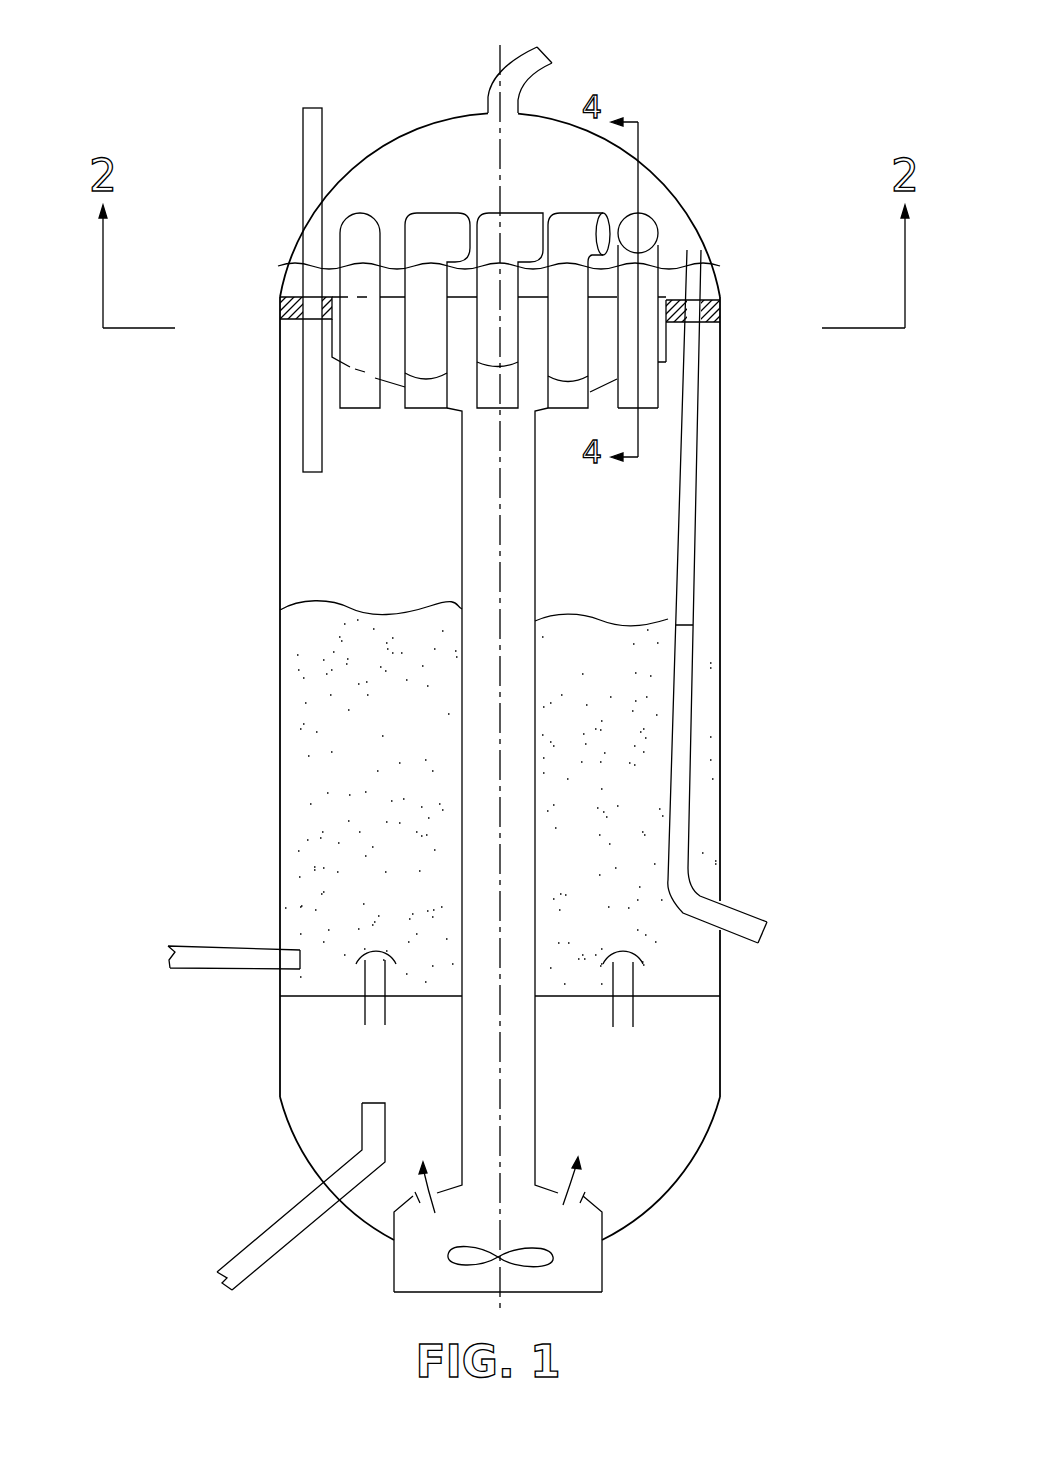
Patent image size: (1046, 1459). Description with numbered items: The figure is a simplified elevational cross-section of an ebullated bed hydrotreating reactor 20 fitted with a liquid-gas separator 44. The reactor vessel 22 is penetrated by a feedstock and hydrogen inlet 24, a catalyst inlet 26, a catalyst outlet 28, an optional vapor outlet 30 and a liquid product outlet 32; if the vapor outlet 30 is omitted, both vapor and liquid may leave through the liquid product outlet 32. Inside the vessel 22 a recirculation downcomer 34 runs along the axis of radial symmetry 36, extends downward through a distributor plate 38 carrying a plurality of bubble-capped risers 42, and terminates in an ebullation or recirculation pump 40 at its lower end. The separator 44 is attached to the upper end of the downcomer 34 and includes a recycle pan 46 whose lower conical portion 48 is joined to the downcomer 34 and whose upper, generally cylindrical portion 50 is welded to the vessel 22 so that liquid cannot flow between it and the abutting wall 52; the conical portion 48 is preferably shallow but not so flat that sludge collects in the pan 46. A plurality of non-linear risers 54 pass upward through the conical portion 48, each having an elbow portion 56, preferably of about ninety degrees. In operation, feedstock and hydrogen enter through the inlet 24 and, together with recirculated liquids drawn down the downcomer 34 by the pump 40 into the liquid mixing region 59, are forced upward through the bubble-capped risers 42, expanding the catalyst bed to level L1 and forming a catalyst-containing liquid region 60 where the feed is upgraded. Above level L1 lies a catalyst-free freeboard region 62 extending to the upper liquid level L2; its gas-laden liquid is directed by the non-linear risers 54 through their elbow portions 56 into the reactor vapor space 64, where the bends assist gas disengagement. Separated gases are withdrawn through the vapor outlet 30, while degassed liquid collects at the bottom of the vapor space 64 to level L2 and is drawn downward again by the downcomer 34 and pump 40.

The ebullated bed hydrotreating reactor 20 is at (555, 676).
The reactor vessel 22 is at (720, 512).
The feedstock and hydrogen inlet 24 is at (230, 1293).
The catalyst inlet 26 is at (303, 157).
The catalyst outlet 28 is at (163, 957).
The vapor outlet 30 is at (520, 50).
The liquid product outlet 32 is at (735, 906).
The recirculation downcomer 34 is at (535, 605).
The axis of radial symmetry 36 is at (500, 193).
The distributor plate 38 is at (693, 998).
The ebullation or recirculation pump 40 is at (602, 1265).
The bubble-capped risers 42 is at (386, 1010).
The liquid-gas separator 44 is at (668, 238).
The recycle pan 46 is at (678, 370).
The lower conical portion 48 is at (395, 385).
The upper cylindrical portion 50 is at (666, 347).
The abutting wall 52 is at (280, 306).
The non-linear risers 54 is at (497, 213).
The elbow portions 56 is at (562, 213).
The liquid mixing region 59 is at (298, 1076).
The catalyst-containing liquid region 60 is at (364, 791).
The freeboard or catalyst-free liquid region 62 is at (385, 536).
The reactor vapor space 64 is at (458, 154).
The catalyst bed level L1 is at (280, 610).
The upper liquid level L2 is at (292, 265).